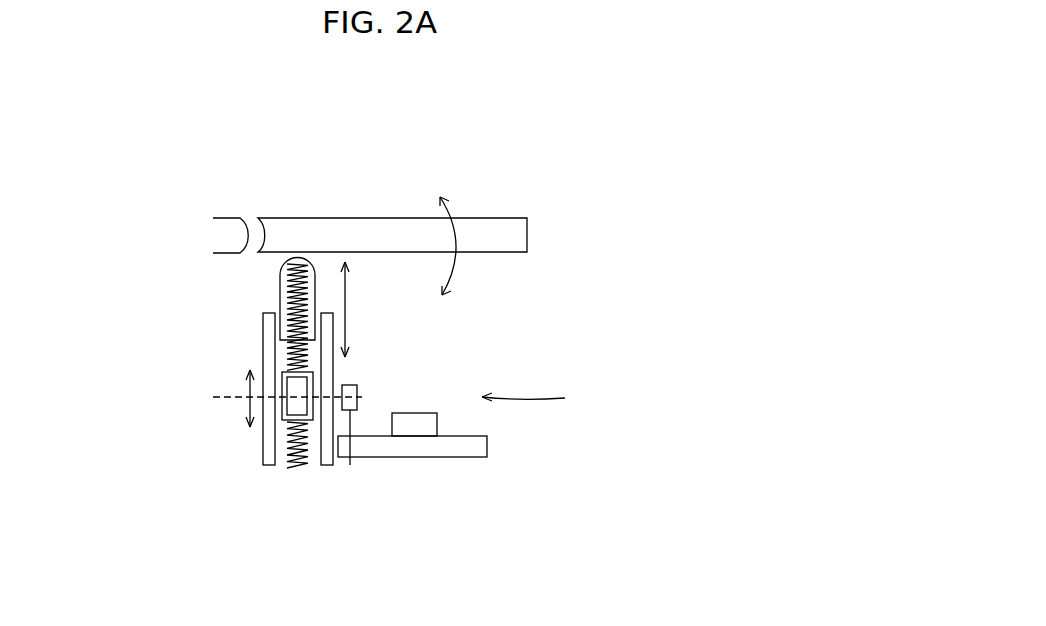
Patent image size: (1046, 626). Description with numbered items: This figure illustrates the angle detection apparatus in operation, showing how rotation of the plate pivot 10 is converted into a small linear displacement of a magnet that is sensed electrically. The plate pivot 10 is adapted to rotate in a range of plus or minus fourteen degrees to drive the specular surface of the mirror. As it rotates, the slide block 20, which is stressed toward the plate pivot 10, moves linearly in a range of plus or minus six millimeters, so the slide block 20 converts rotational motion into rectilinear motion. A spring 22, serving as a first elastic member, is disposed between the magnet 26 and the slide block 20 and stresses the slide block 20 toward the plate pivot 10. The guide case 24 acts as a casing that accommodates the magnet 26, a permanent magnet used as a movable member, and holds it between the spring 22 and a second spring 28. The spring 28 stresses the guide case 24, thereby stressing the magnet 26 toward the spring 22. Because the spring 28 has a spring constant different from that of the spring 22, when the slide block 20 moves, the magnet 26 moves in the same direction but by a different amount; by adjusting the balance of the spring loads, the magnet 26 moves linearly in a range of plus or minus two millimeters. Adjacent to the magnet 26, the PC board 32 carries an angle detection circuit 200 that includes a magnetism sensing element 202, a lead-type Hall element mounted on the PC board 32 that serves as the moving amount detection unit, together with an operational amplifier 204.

The plate pivot 10 is at (377, 237).
The slide block 20 is at (280, 273).
The spring 22 is at (286, 292).
The guide case 24 is at (283, 372).
The magnet 26 is at (292, 385).
The spring 28 is at (287, 469).
The PC board 32 is at (455, 452).
The angle detection circuit 200 is at (607, 389).
The magnetism sensing element 202 is at (352, 385).
The operational amplifier 204 is at (449, 395).